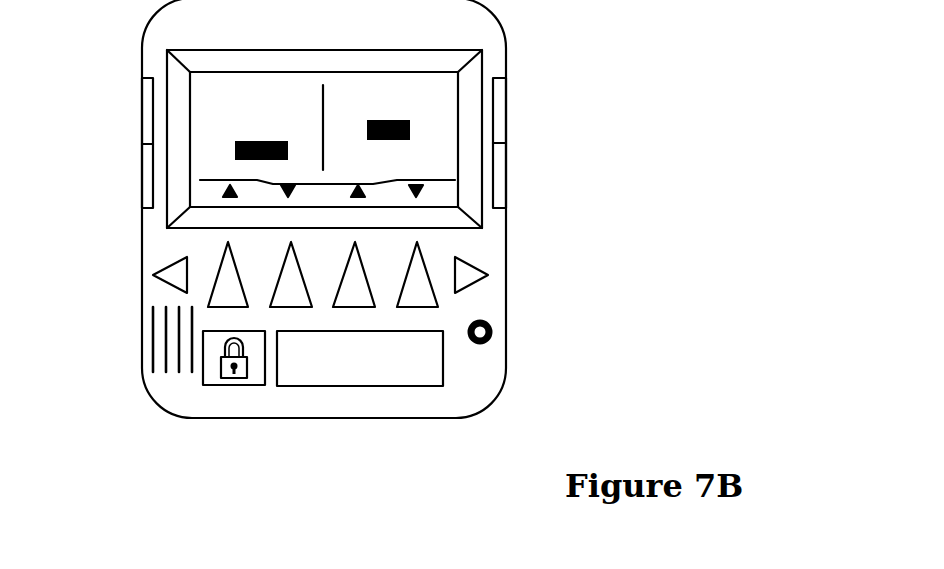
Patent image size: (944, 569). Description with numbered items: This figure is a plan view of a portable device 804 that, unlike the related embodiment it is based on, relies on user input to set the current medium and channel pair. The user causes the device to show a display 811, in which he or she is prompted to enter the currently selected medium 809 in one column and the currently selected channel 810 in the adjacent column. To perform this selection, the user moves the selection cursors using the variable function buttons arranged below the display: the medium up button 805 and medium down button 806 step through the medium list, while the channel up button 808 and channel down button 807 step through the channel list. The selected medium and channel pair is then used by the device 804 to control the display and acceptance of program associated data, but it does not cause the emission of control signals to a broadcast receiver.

The portable device 804 is at (400, 209).
The medium up button 805 is at (147, 210).
The medium down button 806 is at (200, 180).
The channel down button 807 is at (509, 209).
The channel up button 808 is at (455, 180).
The currently selected medium 809 is at (165, 120).
The currently selected channel 810 is at (501, 120).
The display 811 is at (447, 85).